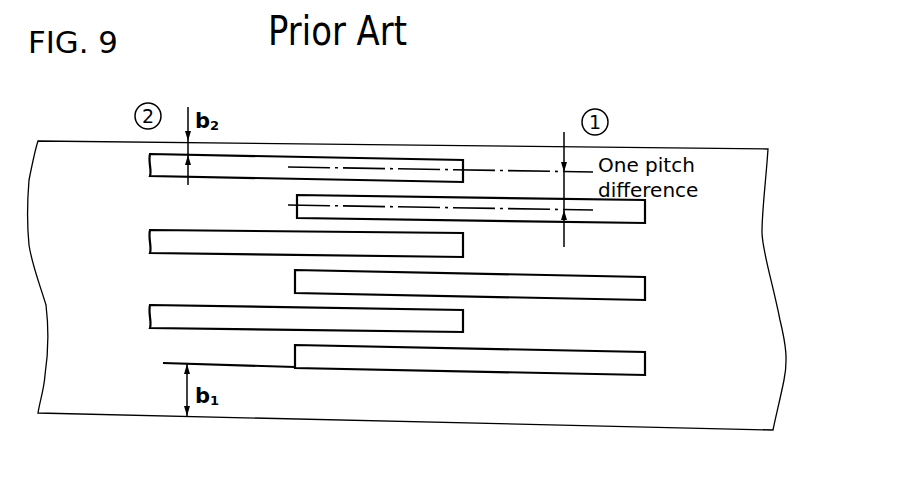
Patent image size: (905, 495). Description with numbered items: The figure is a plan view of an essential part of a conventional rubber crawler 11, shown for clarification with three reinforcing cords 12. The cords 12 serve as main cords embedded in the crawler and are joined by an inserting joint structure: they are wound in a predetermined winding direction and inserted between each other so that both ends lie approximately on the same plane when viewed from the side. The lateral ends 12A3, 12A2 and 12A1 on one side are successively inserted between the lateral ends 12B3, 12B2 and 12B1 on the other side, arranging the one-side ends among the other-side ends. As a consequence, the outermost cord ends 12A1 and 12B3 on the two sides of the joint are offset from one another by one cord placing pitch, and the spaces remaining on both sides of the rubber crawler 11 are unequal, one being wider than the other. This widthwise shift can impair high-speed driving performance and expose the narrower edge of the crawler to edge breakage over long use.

The rubber crawler 11 is at (100, 387).
The reinforcing cords 12 is at (402, 261).
The lateral end on one side 12A1 is at (253, 168).
The lateral end on one side 12A2 is at (285, 243).
The lateral end on one side 12A3 is at (285, 322).
The lateral end on the other side 12B1 is at (411, 200).
The lateral end on the other side 12B2 is at (468, 285).
The lateral end on the other side 12B3 is at (468, 360).